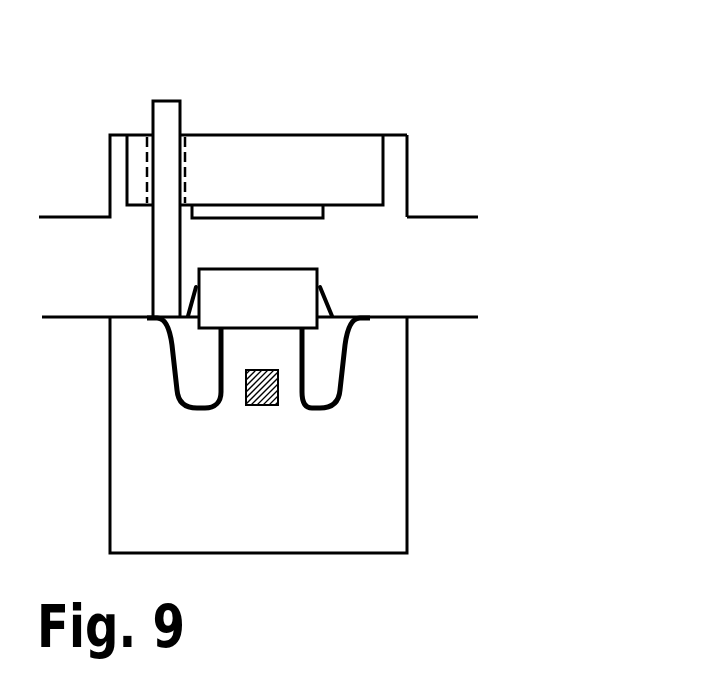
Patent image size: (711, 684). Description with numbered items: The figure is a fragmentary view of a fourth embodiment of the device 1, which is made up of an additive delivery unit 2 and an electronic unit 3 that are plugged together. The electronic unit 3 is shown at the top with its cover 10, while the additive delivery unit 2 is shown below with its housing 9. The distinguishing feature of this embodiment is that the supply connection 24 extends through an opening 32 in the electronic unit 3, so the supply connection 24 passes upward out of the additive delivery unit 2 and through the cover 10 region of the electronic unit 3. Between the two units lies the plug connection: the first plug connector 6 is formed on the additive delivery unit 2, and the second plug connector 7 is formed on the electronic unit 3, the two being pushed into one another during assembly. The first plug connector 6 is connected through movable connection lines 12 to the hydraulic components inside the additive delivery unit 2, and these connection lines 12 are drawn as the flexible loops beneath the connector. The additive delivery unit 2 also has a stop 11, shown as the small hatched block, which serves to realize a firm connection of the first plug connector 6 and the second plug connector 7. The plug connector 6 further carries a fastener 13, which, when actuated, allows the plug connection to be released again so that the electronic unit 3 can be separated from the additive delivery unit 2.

The device 1 is at (530, 116).
The additive delivery unit 2 is at (410, 577).
The electronic unit 3 is at (105, 112).
The first plug connector 6 is at (199, 280).
The second plug connector 7 is at (325, 212).
The housing 9 is at (407, 388).
The cover 10 is at (407, 170).
The stop 11 is at (246, 405).
The movable connection lines 12 is at (172, 365).
The fastener 13 is at (332, 305).
The supply connection 24 is at (167, 101).
The opening 32 is at (187, 166).